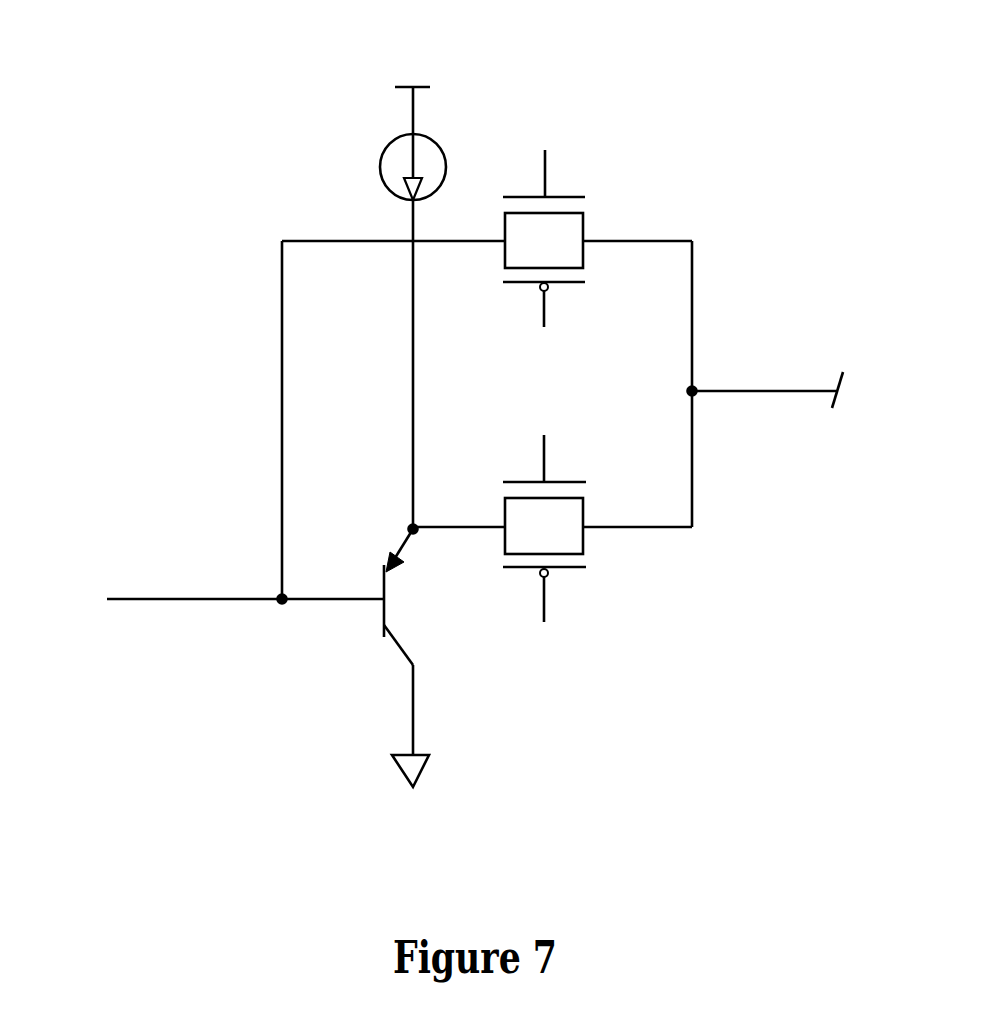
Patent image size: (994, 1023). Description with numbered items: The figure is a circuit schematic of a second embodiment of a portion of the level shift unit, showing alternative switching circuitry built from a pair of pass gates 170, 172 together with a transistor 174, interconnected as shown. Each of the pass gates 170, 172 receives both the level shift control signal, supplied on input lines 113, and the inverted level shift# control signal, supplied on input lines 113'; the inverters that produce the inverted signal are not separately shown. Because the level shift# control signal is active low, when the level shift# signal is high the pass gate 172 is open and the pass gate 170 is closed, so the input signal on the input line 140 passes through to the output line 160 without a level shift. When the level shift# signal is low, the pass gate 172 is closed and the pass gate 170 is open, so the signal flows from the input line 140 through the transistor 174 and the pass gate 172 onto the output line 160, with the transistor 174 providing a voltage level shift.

The input line providing the level shift control signal 113 is at (548, 367).
The input line providing the inverted level shift control signal 113' is at (558, 383).
The input line 140 is at (200, 599).
The output line 160 is at (781, 391).
The pass gate 170 is at (652, 175).
The pass gate 172 is at (652, 580).
The transistor 174 is at (437, 628).